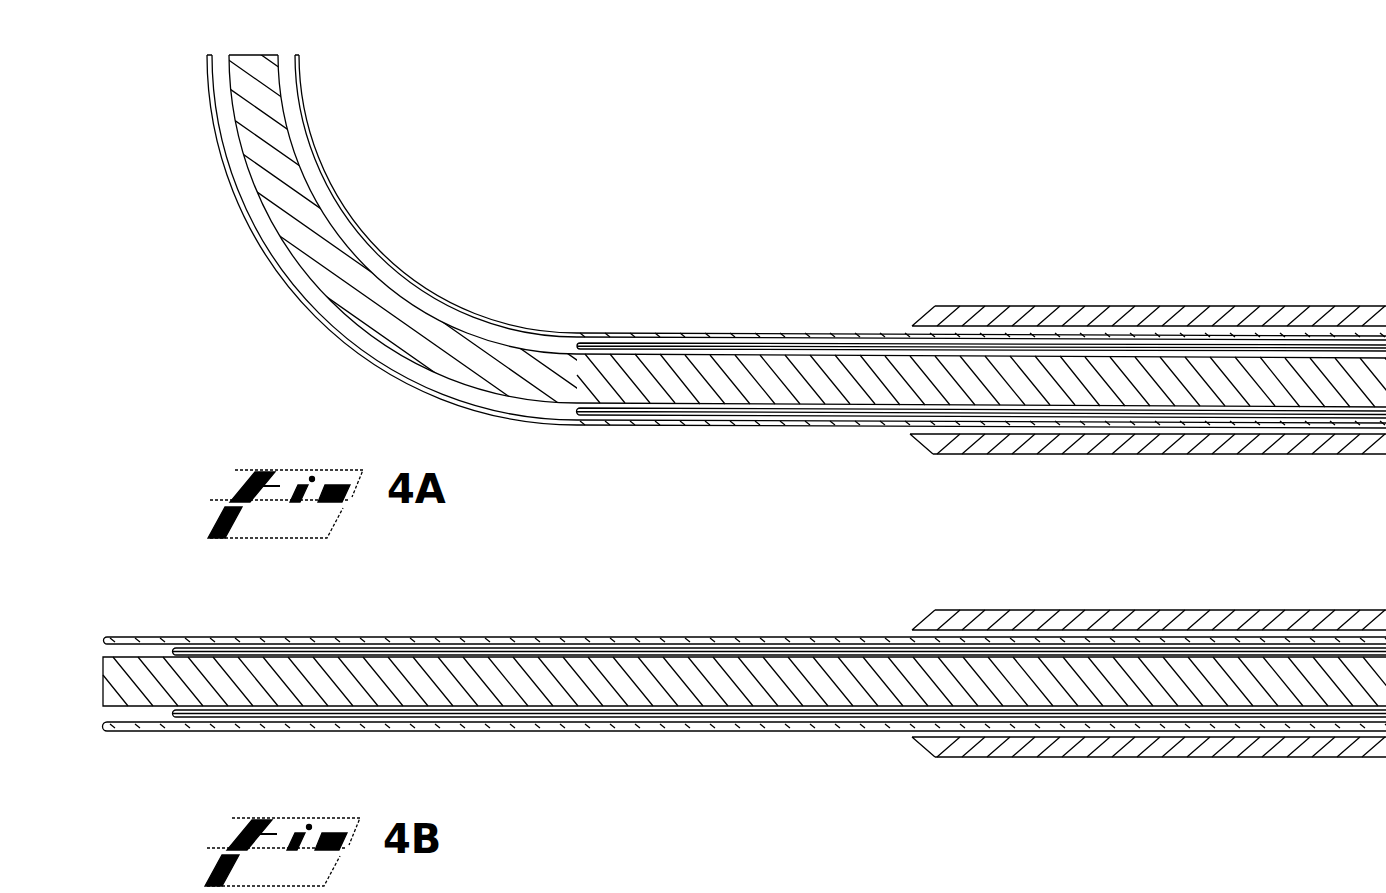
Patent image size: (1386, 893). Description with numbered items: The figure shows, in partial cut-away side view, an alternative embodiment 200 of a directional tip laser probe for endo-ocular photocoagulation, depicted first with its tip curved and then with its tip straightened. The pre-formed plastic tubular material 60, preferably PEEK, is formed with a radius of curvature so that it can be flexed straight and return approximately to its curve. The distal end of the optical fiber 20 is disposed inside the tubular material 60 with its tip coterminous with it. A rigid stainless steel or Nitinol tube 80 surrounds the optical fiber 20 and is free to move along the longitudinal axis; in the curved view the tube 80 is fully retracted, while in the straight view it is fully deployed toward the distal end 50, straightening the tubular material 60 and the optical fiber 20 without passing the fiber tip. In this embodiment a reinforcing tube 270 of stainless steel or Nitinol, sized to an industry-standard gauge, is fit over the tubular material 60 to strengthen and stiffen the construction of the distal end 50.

In FIG. 4A, the optical fiber 20 is at (252, 82).
In FIG. 4B, the optical fiber 20 is at (227, 685).
In FIG. 4A, the distal end 50 is at (693, 288).
In FIG. 4A, the tubular material 60 is at (500, 415).
In FIG. 4B, the tubular material 60 is at (758, 732).
In FIG. 4A, the tube 80 is at (707, 343).
In FIG. 4B, the tube 80 is at (408, 637).
In FIG. 4A, the alternative embodiment 200 is at (693, 288).
In FIG. 4B, the alternative embodiment 200 is at (745, 690).
In FIG. 4A, the reinforcing tube 270 is at (1112, 306).
In FIG. 4B, the reinforcing tube 270 is at (1127, 618).